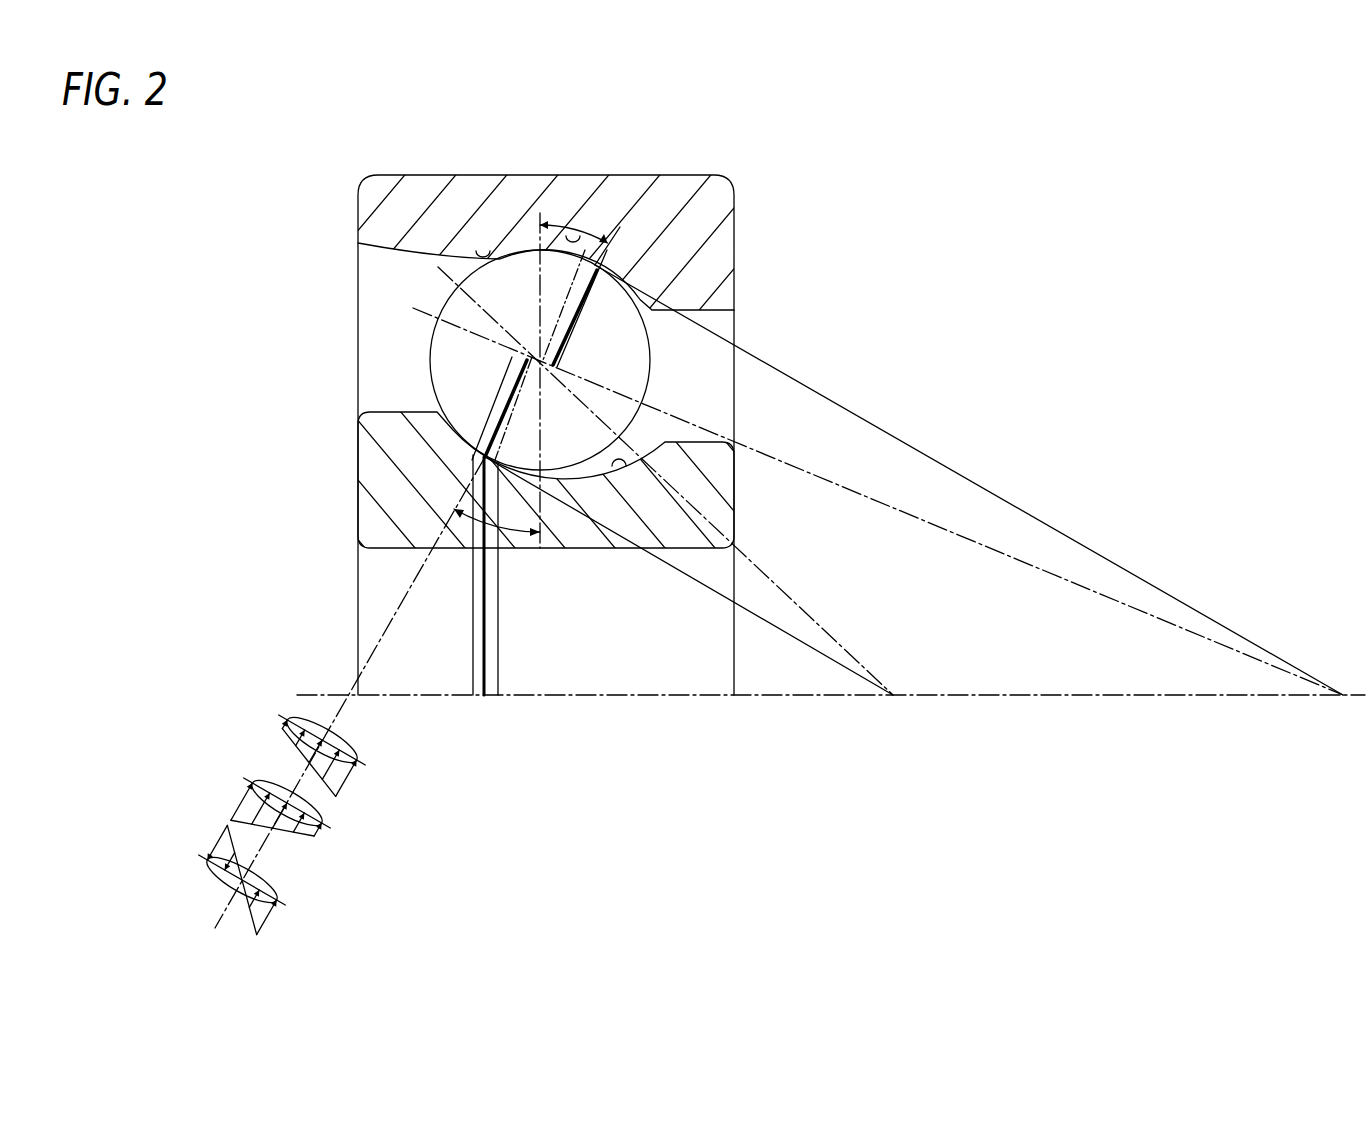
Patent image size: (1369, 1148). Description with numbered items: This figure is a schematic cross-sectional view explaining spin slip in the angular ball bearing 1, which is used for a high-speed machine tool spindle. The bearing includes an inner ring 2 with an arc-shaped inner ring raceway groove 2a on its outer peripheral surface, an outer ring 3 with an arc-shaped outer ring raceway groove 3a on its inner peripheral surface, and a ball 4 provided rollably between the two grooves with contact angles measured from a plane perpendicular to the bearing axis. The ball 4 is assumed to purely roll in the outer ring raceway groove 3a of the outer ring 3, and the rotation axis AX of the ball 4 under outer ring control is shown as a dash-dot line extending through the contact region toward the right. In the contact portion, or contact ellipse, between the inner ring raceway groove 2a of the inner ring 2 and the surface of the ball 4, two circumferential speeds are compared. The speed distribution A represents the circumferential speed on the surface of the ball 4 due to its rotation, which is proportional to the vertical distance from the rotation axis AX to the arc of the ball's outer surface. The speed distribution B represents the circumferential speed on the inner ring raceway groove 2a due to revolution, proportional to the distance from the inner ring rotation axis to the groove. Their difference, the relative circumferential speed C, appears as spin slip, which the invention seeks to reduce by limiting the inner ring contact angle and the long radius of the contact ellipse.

The angular ball bearing 1 is at (755, 507).
The inner ring 2 is at (382, 475).
The inner ring raceway groove 2a is at (620, 472).
The outer ring 3 is at (380, 188).
The outer ring raceway groove 3a is at (479, 240).
The ball 4 is at (448, 293).
The rotation axis of the ball AX is at (1214, 640).
The circumferential speed on the surface of the ball A is at (317, 753).
The circumferential speed on the inner ring raceway groove B is at (286, 817).
The relative circumferential speed C is at (242, 879).